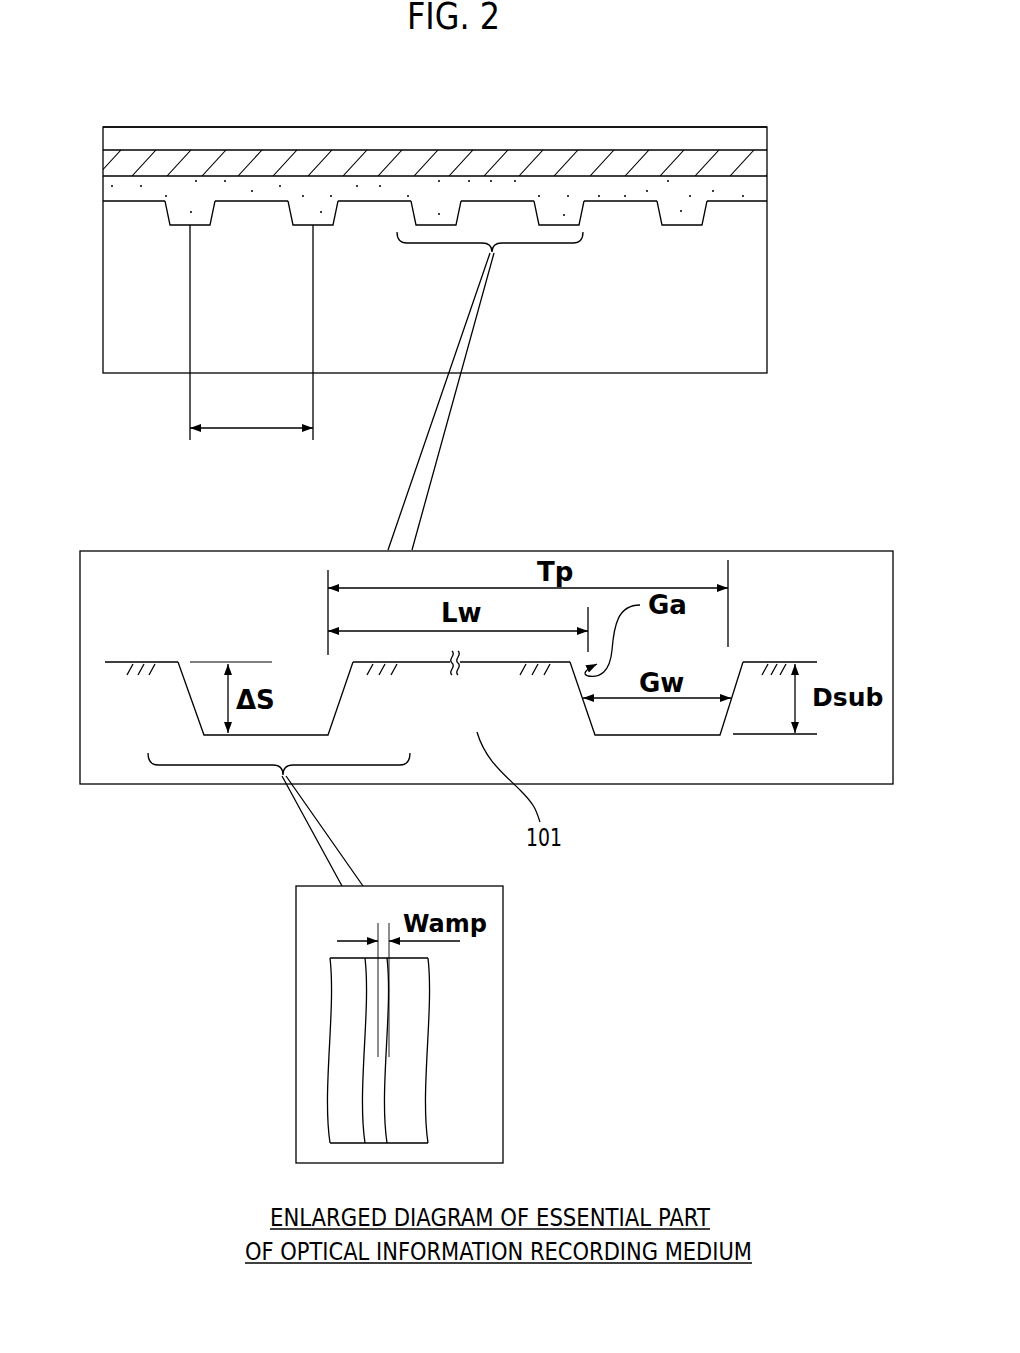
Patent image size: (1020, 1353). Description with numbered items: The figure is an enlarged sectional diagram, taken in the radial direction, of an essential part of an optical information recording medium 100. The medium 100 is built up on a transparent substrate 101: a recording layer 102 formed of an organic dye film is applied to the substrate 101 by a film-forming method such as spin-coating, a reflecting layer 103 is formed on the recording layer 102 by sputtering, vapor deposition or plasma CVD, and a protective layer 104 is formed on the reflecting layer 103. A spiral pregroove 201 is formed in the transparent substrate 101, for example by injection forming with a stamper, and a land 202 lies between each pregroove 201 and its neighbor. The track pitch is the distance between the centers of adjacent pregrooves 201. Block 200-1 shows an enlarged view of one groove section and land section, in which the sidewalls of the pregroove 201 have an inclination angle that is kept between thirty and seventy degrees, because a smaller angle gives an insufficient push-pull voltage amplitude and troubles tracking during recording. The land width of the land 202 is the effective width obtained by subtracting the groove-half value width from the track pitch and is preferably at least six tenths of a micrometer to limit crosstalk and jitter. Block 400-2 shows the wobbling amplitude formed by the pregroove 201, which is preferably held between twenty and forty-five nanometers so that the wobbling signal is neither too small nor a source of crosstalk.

The optical information recording medium 100 is at (665, 91).
The transparent substrate 101 is at (542, 355).
The recording layer 102 is at (133, 190).
The reflecting layer 103 is at (200, 160).
The protective layer 104 is at (277, 138).
The block showing enlarged view of groove section and land section 200-1 is at (663, 550).
The spiral pregroove 201 is at (198, 224).
The land 202 is at (123, 203).
The block showing wobbling amplitude 400-2 is at (503, 1052).